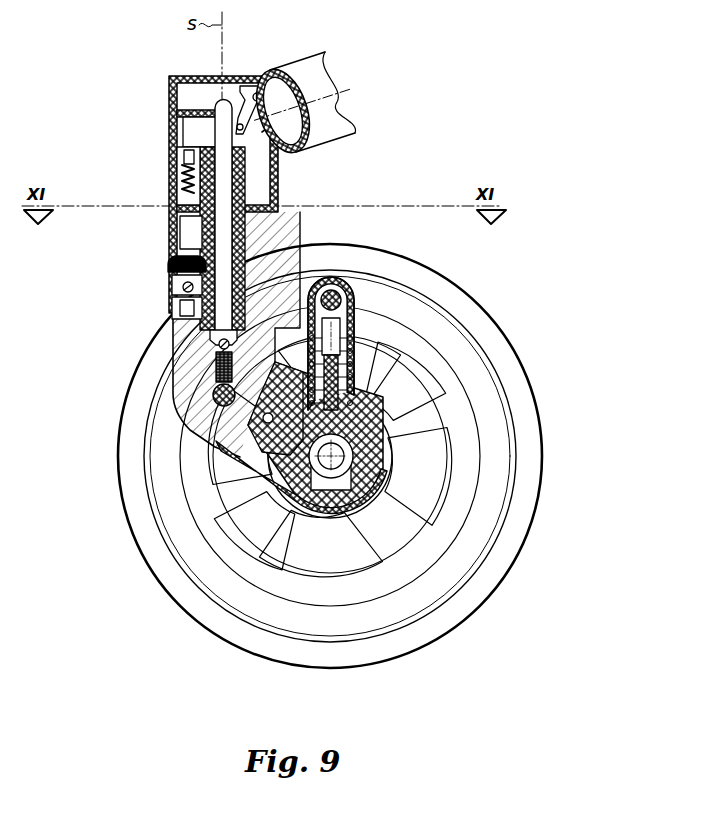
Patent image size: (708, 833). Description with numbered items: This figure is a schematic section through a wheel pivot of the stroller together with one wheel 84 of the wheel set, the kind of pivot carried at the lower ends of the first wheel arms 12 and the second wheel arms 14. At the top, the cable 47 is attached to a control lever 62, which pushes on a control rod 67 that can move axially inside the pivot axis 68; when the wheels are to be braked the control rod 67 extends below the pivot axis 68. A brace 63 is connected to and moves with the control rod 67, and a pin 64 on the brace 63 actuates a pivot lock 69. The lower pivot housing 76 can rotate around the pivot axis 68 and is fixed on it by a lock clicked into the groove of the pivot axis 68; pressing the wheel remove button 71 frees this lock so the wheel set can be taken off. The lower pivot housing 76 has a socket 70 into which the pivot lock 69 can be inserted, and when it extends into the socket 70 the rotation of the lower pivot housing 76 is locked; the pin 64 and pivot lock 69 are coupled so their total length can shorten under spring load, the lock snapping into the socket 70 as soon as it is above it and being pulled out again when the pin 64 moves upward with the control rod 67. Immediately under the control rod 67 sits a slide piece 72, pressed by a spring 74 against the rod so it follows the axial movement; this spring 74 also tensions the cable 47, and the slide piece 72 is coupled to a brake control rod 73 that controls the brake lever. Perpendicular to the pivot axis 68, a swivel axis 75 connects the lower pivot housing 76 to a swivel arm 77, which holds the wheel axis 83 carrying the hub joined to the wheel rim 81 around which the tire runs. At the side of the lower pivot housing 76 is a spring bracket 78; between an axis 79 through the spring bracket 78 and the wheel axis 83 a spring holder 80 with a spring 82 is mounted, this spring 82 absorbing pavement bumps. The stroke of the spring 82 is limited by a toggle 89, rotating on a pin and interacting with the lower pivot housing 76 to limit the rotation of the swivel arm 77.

The first wheel arms 12 is at (315, 86).
The second wheel arms 14 is at (335, 60).
The cable 47 is at (275, 110).
The control lever 62 is at (232, 77).
The brace 63 is at (182, 118).
The pin 64 is at (178, 142).
The control rod 67 is at (195, 108).
The pivot axis 68 is at (278, 216).
The pivot lock 69 is at (172, 206).
The socket 70 is at (180, 230).
The wheel remove button 71 is at (168, 263).
The slide piece 72 is at (215, 325).
The brake control rod 73 is at (215, 342).
The spring 74 is at (212, 362).
The swivel axis 75 is at (205, 390).
The lower pivot housing 76 is at (200, 420).
The swivel arm 77 is at (225, 440).
The spring bracket 78 is at (312, 300).
The axis 79 is at (345, 318).
The spring holder 80 is at (385, 270).
The wheel rim 81 is at (408, 313).
The spring 82 is at (432, 325).
The wheel axis 83 is at (483, 383).
The wheel 84 is at (538, 437).
The toggle 89 is at (230, 512).